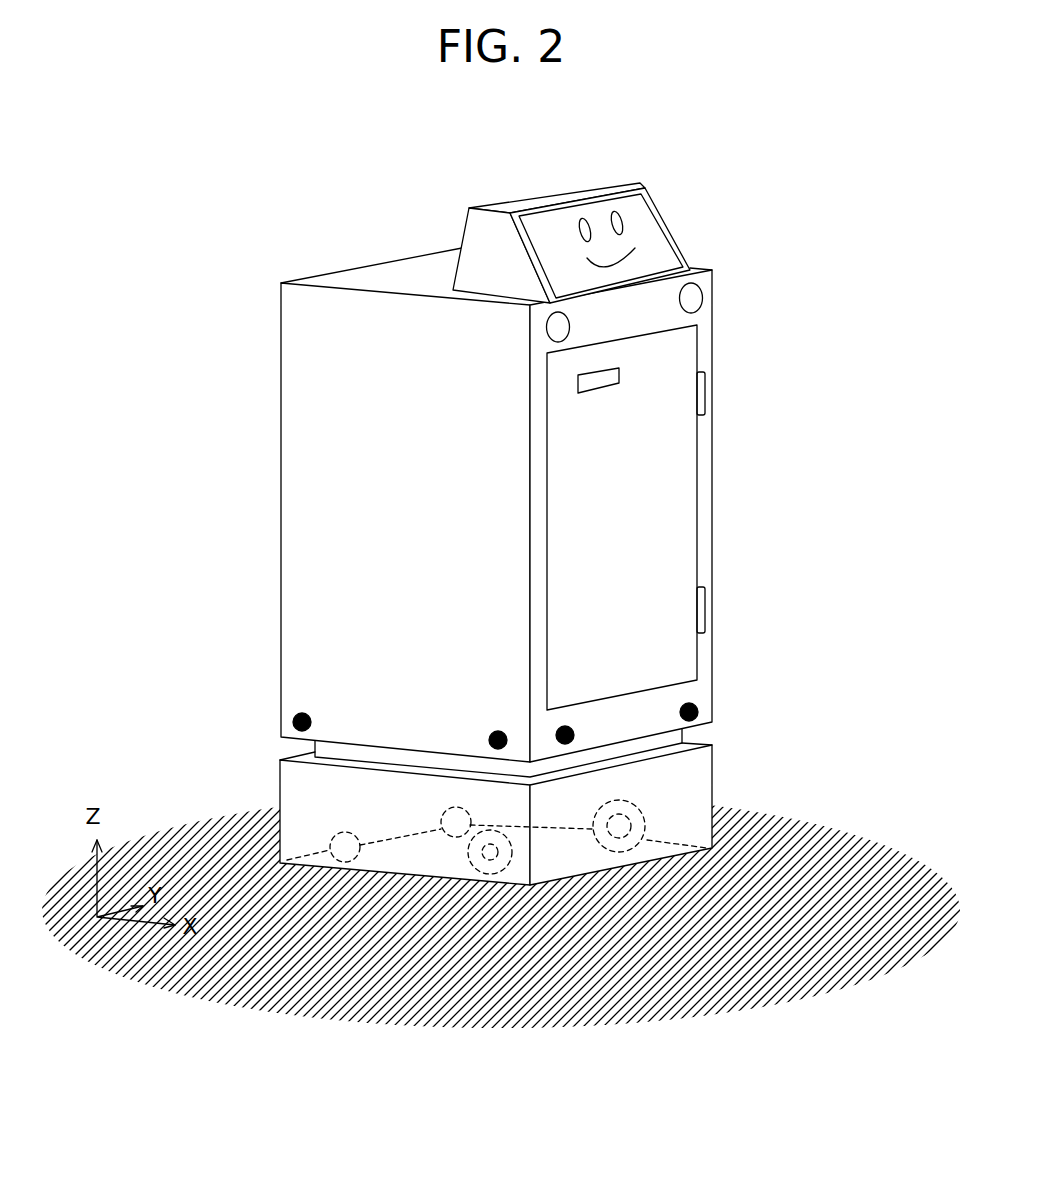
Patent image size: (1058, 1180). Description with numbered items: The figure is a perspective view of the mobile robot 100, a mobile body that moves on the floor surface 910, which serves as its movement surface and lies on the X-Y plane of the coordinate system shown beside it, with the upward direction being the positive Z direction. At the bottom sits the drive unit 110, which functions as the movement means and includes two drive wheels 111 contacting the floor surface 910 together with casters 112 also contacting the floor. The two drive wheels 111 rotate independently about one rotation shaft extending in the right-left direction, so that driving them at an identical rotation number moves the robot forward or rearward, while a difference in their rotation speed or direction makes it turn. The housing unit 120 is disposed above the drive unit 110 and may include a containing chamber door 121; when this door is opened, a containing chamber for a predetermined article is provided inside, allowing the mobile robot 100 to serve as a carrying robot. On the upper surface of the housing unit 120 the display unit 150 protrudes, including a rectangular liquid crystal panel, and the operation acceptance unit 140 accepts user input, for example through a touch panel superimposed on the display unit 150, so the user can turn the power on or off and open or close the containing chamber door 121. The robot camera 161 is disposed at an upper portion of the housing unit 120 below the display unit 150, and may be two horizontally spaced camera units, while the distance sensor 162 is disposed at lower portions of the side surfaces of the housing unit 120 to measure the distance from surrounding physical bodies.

The mobile robot 100 is at (268, 247).
The drive unit 110 is at (566, 752).
The drive wheels 111 is at (647, 810).
The casters 112 is at (330, 833).
The housing unit 120 is at (550, 502).
The containing chamber door 121 is at (662, 470).
The operation acceptance unit 140 is at (622, 222).
The display unit 150 is at (663, 253).
The robot camera 161 is at (690, 300).
The distance sensor 162 is at (292, 720).
The floor surface 910 is at (797, 847).